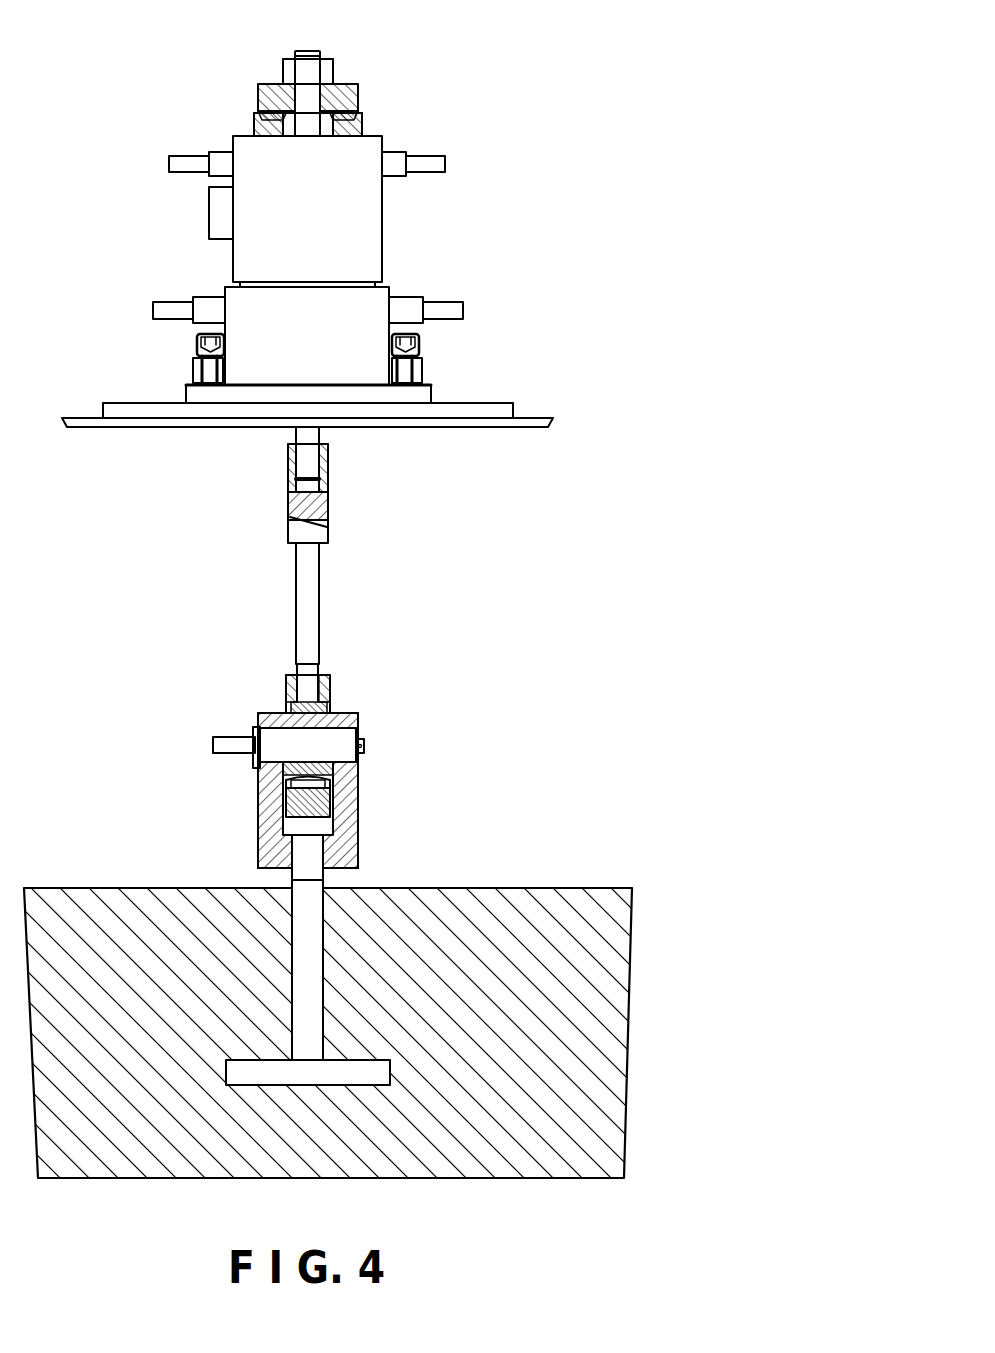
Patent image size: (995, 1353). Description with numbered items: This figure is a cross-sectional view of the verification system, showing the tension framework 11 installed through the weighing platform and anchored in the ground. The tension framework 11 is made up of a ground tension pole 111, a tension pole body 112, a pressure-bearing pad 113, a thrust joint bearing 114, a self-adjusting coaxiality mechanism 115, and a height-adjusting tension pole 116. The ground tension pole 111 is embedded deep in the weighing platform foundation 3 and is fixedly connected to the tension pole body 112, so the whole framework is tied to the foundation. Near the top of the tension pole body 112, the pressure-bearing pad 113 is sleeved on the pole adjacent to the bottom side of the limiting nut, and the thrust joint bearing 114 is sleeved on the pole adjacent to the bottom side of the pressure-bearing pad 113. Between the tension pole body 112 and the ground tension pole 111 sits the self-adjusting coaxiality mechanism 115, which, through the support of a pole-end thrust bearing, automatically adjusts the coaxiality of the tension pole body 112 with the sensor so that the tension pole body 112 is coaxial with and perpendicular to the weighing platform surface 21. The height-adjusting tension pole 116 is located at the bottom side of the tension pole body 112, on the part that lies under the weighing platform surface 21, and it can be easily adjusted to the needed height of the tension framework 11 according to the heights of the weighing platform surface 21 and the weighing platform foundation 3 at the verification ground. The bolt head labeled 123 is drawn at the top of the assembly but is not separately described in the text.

The weighing platform foundation 3 is at (150, 920).
The tension framework 11 is at (392, 425).
The weighing platform surface 21 is at (162, 427).
The ground tension pole 111 is at (305, 1027).
The tension pole body 112 is at (313, 54).
The pressure-bearing pad 113 is at (358, 94).
The thrust joint bearing 114 is at (362, 126).
The self-adjusting coaxiality mechanism 115 is at (347, 807).
The height-adjusting tension pole 116 is at (327, 509).
The bolt head 123 is at (289, 69).